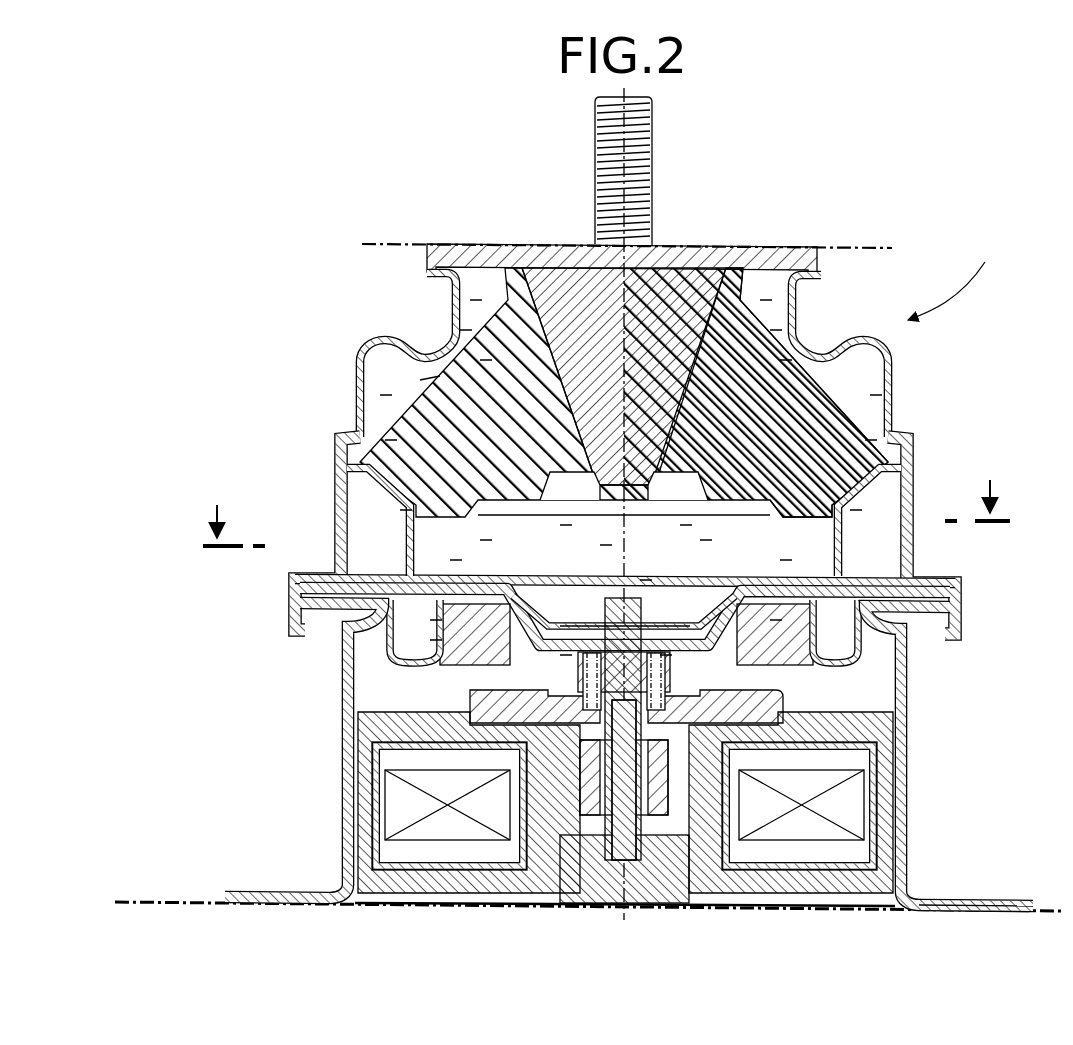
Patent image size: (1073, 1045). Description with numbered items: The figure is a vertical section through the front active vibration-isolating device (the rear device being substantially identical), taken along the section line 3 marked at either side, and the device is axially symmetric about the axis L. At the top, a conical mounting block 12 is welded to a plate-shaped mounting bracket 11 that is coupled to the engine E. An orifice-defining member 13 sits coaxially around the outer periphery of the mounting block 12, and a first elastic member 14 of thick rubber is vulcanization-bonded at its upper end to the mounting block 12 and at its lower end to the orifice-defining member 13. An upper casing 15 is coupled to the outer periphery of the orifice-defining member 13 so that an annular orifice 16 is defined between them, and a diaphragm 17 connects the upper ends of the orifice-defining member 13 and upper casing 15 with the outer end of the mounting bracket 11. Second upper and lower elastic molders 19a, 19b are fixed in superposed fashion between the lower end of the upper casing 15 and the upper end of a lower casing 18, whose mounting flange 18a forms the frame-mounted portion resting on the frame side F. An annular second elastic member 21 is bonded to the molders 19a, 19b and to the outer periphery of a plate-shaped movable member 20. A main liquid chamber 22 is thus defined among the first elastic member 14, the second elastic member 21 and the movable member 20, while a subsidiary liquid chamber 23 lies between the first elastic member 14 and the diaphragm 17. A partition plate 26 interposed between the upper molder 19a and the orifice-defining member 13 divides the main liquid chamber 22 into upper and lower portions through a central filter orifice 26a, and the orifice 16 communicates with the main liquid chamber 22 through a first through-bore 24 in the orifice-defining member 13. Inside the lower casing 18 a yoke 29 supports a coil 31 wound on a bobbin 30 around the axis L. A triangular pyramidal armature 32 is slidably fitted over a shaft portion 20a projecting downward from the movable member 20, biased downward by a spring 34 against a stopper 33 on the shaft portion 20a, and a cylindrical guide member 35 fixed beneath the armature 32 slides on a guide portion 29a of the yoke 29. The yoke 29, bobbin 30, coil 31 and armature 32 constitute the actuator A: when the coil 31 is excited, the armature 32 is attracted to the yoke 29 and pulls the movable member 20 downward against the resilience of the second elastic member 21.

The mounting bracket 11 is at (806, 247).
The mounting block 12 is at (557, 290).
The orifice-defining member 13 is at (891, 432).
The first elastic member 14 is at (796, 362).
The upper casing 15 is at (337, 517).
The orifice 16 is at (892, 553).
The diaphragm 17 is at (380, 345).
The lower casing 18 is at (352, 712).
The mounting flange 18a is at (962, 905).
The second upper elastic molder 19a is at (823, 590).
The second lower elastic molder 19b is at (345, 657).
The movable member 20 is at (532, 612).
The shaft portion 20a is at (672, 678).
The second elastic member 21 is at (473, 604).
The main liquid chamber 22 is at (748, 557).
The subsidiary liquid chamber 23 is at (406, 394).
The first through-bore 24 is at (407, 548).
The partition plate 26 is at (706, 606).
The filter orifice 26a is at (603, 620).
The yoke 29 is at (437, 714).
The guide portion 29a is at (482, 847).
The bobbin 30 is at (356, 880).
The coil 31 is at (624, 805).
The armature 32 is at (785, 700).
The stopper 33 is at (682, 788).
The spring 34 is at (586, 702).
The guide member 35 is at (466, 718).
The section line 3- 3 is at (605, 487).
The actuator A is at (930, 840).
The axis L is at (646, 282).
The engine E is at (392, 247).
The frame side reference plane F is at (200, 901).